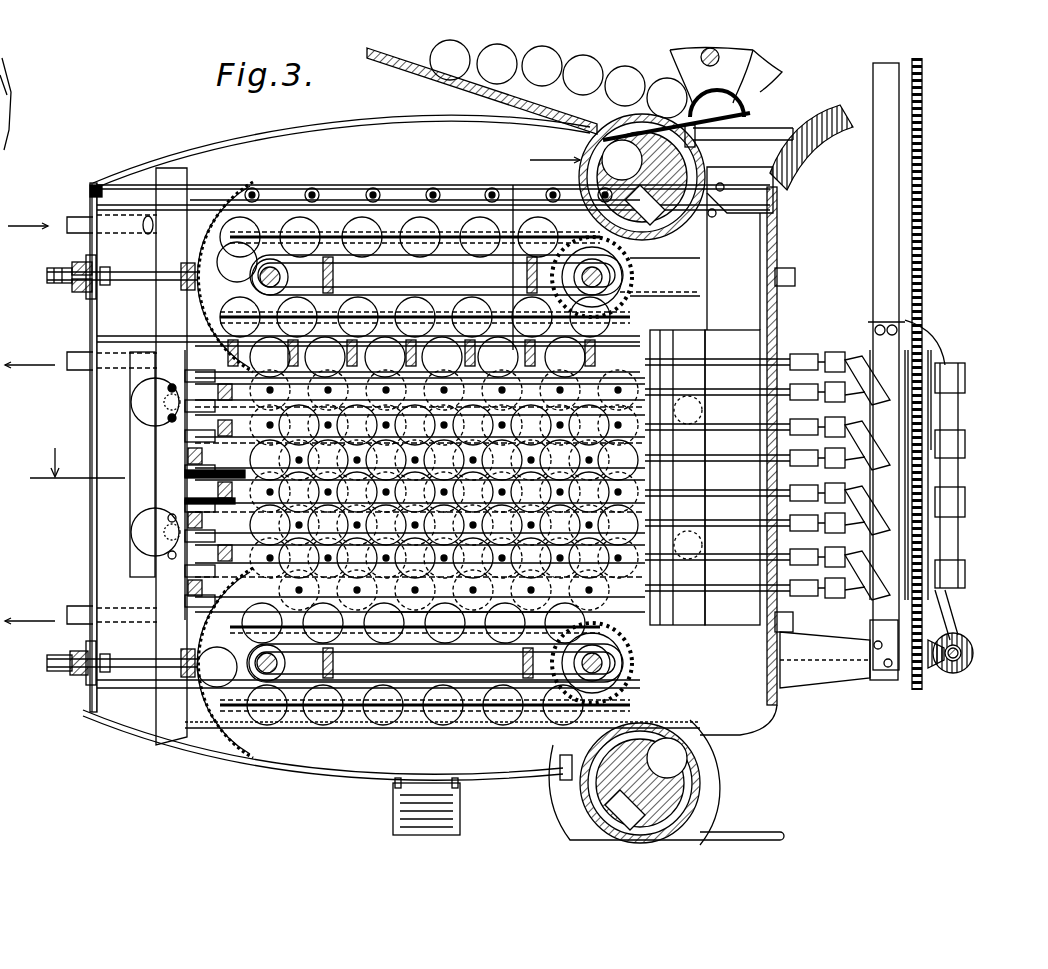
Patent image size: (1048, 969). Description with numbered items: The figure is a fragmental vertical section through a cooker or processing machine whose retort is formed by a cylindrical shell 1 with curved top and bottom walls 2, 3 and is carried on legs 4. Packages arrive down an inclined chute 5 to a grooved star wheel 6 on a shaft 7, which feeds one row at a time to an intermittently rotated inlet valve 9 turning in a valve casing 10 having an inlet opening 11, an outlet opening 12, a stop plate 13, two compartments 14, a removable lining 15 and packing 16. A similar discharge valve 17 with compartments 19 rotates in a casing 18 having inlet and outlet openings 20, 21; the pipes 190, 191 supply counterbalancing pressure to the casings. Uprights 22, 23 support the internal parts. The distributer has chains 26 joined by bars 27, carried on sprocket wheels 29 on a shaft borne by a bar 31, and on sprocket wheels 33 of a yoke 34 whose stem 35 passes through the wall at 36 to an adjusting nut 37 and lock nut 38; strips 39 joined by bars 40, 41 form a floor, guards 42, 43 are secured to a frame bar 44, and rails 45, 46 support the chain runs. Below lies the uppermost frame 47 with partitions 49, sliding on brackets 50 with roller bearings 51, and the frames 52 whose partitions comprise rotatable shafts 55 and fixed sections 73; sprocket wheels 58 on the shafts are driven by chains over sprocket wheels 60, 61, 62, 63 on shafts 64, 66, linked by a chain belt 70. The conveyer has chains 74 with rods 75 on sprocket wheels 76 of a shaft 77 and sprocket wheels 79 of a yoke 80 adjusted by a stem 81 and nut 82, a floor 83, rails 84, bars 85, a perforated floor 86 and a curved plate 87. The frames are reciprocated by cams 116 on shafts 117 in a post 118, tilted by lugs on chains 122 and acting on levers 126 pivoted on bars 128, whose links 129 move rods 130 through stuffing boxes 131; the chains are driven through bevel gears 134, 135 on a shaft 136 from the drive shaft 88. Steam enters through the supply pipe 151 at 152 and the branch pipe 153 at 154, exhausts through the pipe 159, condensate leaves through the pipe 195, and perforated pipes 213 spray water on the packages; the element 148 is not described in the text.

The cylindrical shell 1 is at (90, 498).
The curved top wall 2 is at (372, 115).
The curved bottom wall 3 is at (262, 766).
The standards or legs 4 is at (77, 468).
The inclined chute or runway 5 is at (440, 72).
The star wheel or roller 6 is at (590, 147).
The shaft 7 is at (726, 77).
The inlet valve 9 is at (705, 262).
The valve casing 10 is at (548, 150).
The inlet opening 11 is at (717, 108).
The outlet opening 12 is at (578, 266).
The stop plate 13 is at (698, 117).
The compartments 14 is at (712, 235).
The cylindrical lining 15 is at (785, 145).
The packing 16 is at (705, 286).
The discharge valve 17 is at (728, 790).
The valve casing 18 is at (715, 760).
The compartments 19 is at (600, 806).
The inlet opening 20 is at (600, 740).
The outlet opening 21 is at (742, 820).
The upright 22 is at (171, 456).
The upright 23 is at (685, 340).
The endless chains 26 is at (395, 220).
The transverse parallel bars 27 is at (280, 215).
The sprocket wheels 29 is at (665, 277).
The bar 31 is at (668, 296).
The sprocket wheels 33 is at (290, 250).
The yoke 34 is at (185, 265).
The stem 35 is at (128, 272).
The wall passage 36 is at (85, 285).
The adjusting nut 37 is at (72, 266).
The lock nut 38 is at (48, 268).
The endless strips or bars 39 is at (436, 275).
The bar 40 is at (527, 268).
The bar 41 is at (320, 287).
The guard 42 is at (221, 251).
The guard 43 is at (415, 174).
The transverse frame bar 44 is at (170, 318).
The rails 45 is at (525, 267).
The rails 46 is at (694, 337).
The uppermost frame 47 is at (417, 356).
The transverse partitions 49 is at (360, 345).
The brackets 50 is at (171, 465).
The roller bearings 51 is at (200, 372).
The frames 52 is at (220, 430).
The rotatable partition part 55 is at (362, 428).
The sprocket wheels 58 is at (534, 393).
The sprocket wheel 60 is at (718, 410).
The sprocket wheel 61 is at (145, 395).
The sprocket wheel 62 is at (716, 543).
The sprocket wheel 63 is at (145, 532).
The shaft 64 is at (697, 460).
The shaft 66 is at (738, 585).
The chain belt 70 is at (716, 445).
The fixed partition part 73 is at (575, 394).
The chains 74 is at (553, 630).
The transverse rods 75 is at (470, 700).
The sprocket wheels 76 is at (622, 650).
The shaft 77 is at (605, 663).
The sprocket wheels 79 is at (435, 663).
The yoke 80 is at (185, 680).
The stem 81 is at (128, 660).
The adjusting nut 82 is at (62, 672).
The floor or runway 83 is at (414, 672).
The rails 84 is at (392, 645).
The bars 85 is at (408, 720).
The perforated floor 86 is at (349, 748).
The curved plate 87 is at (225, 663).
The drive shaft 88 is at (834, 510).
The cams 116 is at (945, 610).
The shafts 117 is at (960, 420).
The post 118 is at (952, 478).
The endless chains 122 is at (925, 228).
The levers 126 is at (866, 475).
The vertically-extending bars 128 is at (873, 226).
The links 129 is at (887, 334).
The rods 130 is at (745, 385).
The stuffing boxes 131 is at (800, 352).
The bevel gears 134 is at (965, 640).
The bevel gear wheels 135 is at (975, 652).
The shaft 136 is at (970, 672).
The valve 148 is at (758, 480).
The steam supply pipe 151 is at (78, 195).
The steam inlet point 152 is at (148, 216).
The branch pipe 153 is at (785, 268).
The steam inlet point 154 is at (706, 665).
The exhaust pipe 159 is at (78, 352).
The pipe 190 is at (768, 826).
The pipe 191 is at (790, 128).
The pipe 195 is at (395, 808).
The perforated pipes 213 is at (312, 188).